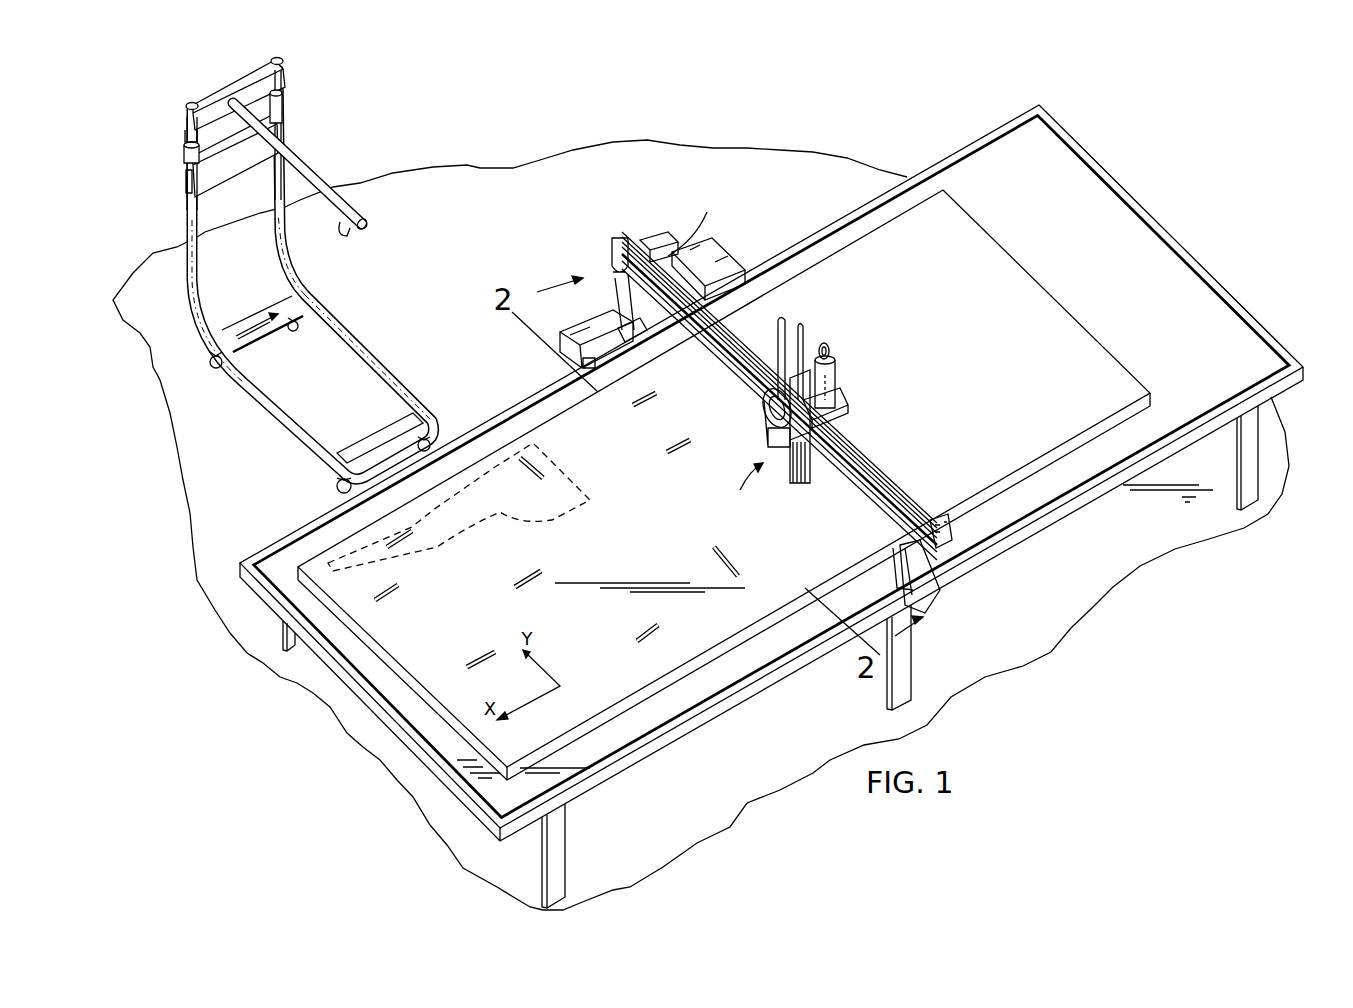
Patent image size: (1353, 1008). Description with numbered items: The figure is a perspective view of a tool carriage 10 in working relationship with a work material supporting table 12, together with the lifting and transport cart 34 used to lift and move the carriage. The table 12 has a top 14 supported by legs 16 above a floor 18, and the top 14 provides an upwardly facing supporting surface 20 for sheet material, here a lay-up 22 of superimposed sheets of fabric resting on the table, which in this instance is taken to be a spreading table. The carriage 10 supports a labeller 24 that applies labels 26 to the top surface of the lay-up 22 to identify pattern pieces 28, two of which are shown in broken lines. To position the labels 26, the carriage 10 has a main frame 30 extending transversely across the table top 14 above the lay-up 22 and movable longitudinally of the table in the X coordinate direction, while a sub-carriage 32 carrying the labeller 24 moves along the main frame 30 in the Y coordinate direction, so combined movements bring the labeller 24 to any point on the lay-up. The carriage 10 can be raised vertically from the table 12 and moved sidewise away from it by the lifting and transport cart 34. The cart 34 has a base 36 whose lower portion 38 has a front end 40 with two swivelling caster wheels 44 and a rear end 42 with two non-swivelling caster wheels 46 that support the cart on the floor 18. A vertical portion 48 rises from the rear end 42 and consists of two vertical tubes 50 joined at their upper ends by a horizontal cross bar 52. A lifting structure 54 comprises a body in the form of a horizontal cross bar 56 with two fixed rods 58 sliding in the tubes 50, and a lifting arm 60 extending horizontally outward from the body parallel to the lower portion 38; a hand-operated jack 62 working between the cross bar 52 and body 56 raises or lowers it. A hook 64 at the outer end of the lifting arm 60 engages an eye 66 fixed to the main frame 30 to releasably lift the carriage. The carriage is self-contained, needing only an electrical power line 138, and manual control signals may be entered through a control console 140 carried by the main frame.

The carriage 10 is at (766, 249).
The table 12 is at (1103, 205).
The top 14 is at (1132, 227).
The legs 16 is at (565, 846).
The floor 18 is at (1023, 650).
The supporting surface 20 is at (1161, 255).
The lay-up 22 is at (304, 560).
The labeller 24 is at (775, 414).
The labels 26 is at (647, 410).
The pattern pieces 28 is at (436, 507).
The main frame 30 is at (881, 473).
The sub-carriage 32 is at (838, 416).
The lifting and transport cart 34 is at (180, 283).
The base 36 is at (292, 268).
The lower portion 38 is at (376, 356).
The front end 40 is at (388, 447).
The rear end 42 is at (212, 321).
The swivelling caster wheels 44 is at (431, 437).
The non-swivelling caster wheels 46 is at (293, 327).
The vertical portion 48 is at (200, 261).
The vertical tubes 50 is at (186, 216).
The horizontal cross bar 52 is at (239, 164).
The lifting structure 54 is at (186, 108).
The horizontal cross bar 56 is at (226, 92).
The rods 58 is at (284, 94).
The lifting arm 60 is at (298, 157).
The hand-operated jack 62 is at (185, 152).
The hook 64 is at (348, 226).
The eye 66 is at (832, 351).
The electrical power line 138 is at (684, 238).
The control console 140 is at (940, 517).